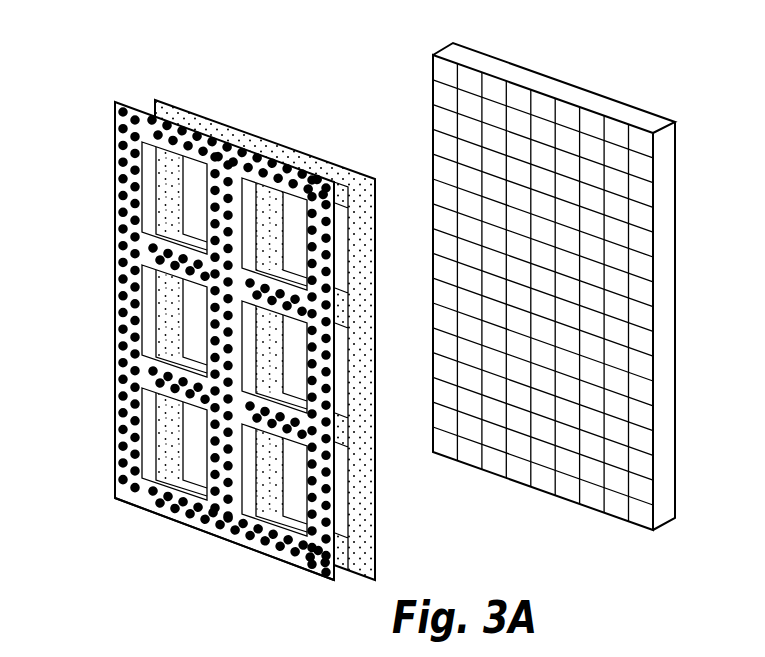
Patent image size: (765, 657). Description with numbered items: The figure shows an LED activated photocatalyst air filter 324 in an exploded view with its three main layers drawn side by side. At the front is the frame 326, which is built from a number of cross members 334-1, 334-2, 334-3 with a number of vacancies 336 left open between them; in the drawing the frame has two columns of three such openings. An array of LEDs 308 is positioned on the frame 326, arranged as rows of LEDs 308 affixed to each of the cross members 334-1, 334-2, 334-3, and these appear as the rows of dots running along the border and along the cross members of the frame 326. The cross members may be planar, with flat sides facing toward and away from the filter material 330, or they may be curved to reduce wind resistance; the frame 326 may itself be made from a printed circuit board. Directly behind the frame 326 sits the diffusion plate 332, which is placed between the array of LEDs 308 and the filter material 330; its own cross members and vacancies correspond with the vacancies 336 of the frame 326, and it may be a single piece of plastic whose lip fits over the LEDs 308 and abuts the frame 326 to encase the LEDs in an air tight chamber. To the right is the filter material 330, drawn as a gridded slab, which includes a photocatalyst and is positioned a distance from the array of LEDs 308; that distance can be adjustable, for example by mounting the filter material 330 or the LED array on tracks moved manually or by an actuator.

The LED activated photocatalyst air filter 324 is at (138, 33).
The frame 326 is at (178, 122).
The diffusion plate 332 is at (259, 142).
The cross member 334-1 is at (170, 276).
The cross member 334-2 is at (208, 324).
The cross member 334-3 is at (142, 350).
The LEDs 308 is at (158, 505).
The vacancies 336 is at (293, 502).
The filter material 330 is at (572, 92).